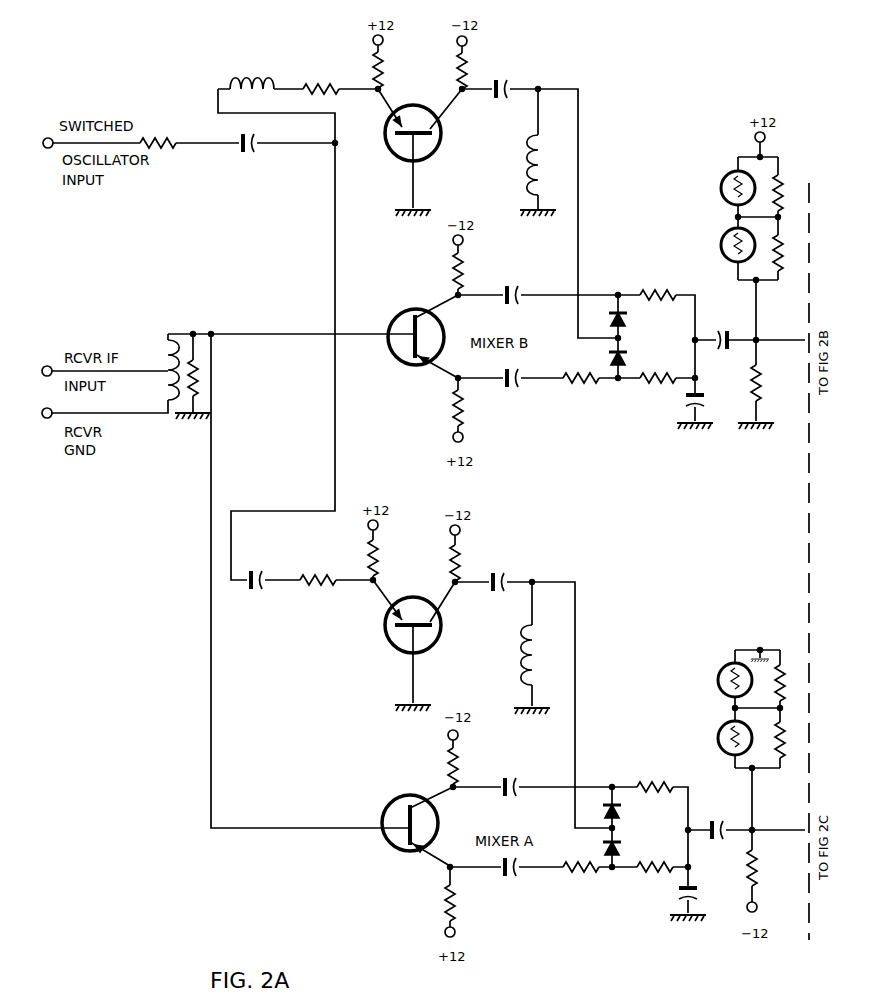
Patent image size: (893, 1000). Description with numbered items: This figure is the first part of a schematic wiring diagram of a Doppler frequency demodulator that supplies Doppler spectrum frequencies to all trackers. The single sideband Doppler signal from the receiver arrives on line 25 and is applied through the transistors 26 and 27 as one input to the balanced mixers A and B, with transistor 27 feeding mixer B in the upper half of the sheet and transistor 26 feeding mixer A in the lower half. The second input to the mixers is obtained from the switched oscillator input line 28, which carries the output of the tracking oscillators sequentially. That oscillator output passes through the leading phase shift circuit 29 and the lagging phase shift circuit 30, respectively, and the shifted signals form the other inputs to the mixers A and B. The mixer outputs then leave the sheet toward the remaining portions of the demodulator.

The line 25 is at (47, 366).
The transistor 26 is at (384, 804).
The transistor 27 is at (402, 311).
The switched oscillator input line 28 is at (48, 149).
The leading phase shift circuit 29 is at (284, 583).
The lagging phase shift circuit 30 is at (286, 88).